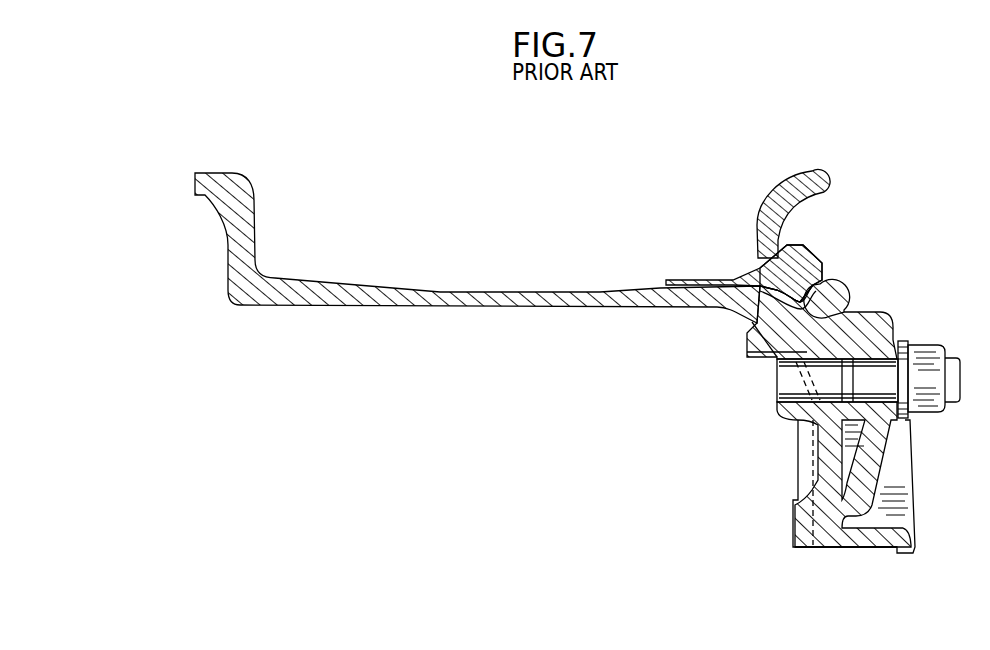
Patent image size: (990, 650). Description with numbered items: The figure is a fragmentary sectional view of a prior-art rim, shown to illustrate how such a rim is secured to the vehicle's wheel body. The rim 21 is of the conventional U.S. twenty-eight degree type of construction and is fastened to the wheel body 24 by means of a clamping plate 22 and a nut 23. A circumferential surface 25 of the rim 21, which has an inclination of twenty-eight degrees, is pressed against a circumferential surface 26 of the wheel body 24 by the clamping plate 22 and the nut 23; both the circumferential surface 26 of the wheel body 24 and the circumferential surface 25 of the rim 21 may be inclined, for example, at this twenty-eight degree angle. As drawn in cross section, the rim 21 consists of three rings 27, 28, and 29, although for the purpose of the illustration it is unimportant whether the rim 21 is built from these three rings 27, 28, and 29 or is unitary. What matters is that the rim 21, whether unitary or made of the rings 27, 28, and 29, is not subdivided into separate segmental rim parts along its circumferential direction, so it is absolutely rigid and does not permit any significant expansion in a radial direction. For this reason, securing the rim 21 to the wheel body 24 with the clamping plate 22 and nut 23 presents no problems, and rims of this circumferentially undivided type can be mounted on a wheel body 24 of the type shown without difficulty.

The rim 21 is at (511, 287).
The clamping plate 22 is at (877, 465).
The nut 23 is at (926, 391).
The wheel body 24 is at (822, 547).
The circumferential surface of the rim 25 is at (753, 320).
The circumferential surface of the wheel body 26 is at (752, 360).
The ring 27 is at (566, 306).
The ring 28 is at (814, 173).
The ring 29 is at (805, 265).